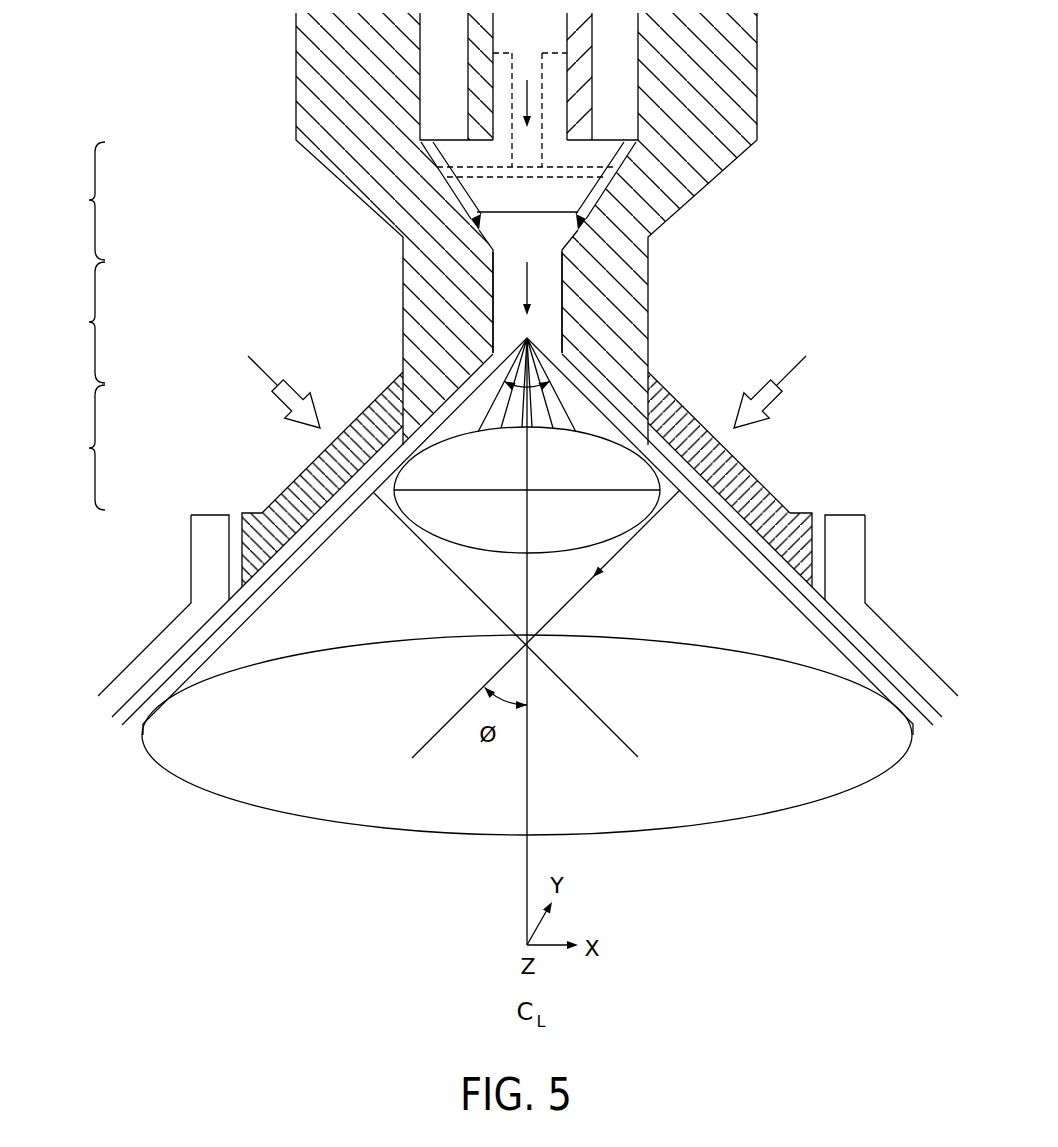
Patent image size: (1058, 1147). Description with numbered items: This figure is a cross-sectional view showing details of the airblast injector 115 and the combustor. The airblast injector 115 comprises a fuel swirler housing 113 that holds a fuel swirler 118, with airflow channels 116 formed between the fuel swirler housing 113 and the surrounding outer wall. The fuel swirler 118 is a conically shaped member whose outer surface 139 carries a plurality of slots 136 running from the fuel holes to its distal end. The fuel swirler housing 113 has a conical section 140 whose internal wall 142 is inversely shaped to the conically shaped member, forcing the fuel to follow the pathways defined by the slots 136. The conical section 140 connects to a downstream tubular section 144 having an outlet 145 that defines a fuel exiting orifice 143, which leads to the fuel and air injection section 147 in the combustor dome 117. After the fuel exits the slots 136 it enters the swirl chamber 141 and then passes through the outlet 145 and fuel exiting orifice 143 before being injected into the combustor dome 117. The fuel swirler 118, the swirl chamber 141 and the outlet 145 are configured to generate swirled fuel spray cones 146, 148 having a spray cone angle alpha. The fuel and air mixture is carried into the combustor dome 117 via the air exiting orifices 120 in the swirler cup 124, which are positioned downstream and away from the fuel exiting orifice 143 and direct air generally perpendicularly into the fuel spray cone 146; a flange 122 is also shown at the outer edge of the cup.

The fuel swirler housing 113 is at (723, 90).
The airblast injector 115 is at (793, 258).
The airflow channels 116 is at (340, 345).
The combustor dome 117 is at (766, 822).
The fuel swirler 118 is at (648, 240).
The air exiting orifices 120 is at (337, 453).
The flange 122 is at (128, 656).
The swirler cup 124 is at (297, 503).
The slots 136 is at (563, 193).
The outer surface 139 is at (447, 174).
The conical section 140 is at (73, 201).
The swirl chamber 141 is at (497, 255).
The internal wall 142 is at (522, 229).
The fuel exiting orifice 143 is at (545, 352).
The tubular section 144 is at (73, 322).
The outlet 145 is at (545, 297).
The swirled fuel spray cone 146 is at (240, 795).
The fuel and air injection section 147 is at (73, 447).
The swirled fuel spray cone 148 is at (487, 553).